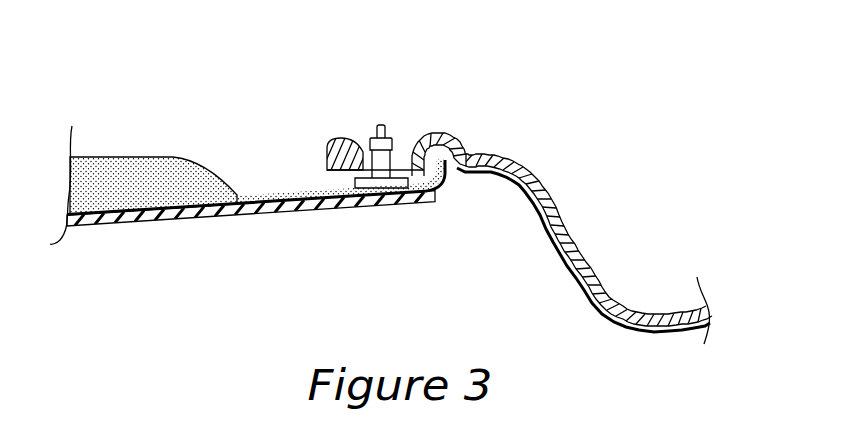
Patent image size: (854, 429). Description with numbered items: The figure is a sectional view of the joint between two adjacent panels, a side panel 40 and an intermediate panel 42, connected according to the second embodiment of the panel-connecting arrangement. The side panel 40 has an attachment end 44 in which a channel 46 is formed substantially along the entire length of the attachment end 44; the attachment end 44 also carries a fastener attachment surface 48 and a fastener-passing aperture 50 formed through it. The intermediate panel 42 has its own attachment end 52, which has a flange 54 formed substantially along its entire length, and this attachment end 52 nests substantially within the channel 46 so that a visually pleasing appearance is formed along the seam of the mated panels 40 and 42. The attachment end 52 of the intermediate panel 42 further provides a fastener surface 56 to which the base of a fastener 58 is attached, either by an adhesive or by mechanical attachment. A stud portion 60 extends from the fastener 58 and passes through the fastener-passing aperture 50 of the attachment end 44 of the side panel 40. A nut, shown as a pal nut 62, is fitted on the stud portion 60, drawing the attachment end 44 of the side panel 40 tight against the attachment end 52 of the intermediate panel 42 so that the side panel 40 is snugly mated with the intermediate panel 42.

The side panel 40 is at (573, 250).
The intermediate panel 42 is at (178, 183).
The attachment end 44 is at (422, 140).
The channel 46 is at (474, 158).
The fastener attachment surface 48 is at (403, 150).
The fastener-passing aperture 50 is at (360, 150).
The attachment end 52 is at (397, 193).
The flange 54 is at (423, 198).
The fastener surface 56 is at (297, 182).
The fastener 58 is at (375, 190).
The stud portion 60 is at (381, 127).
The pal nut 62 is at (371, 142).